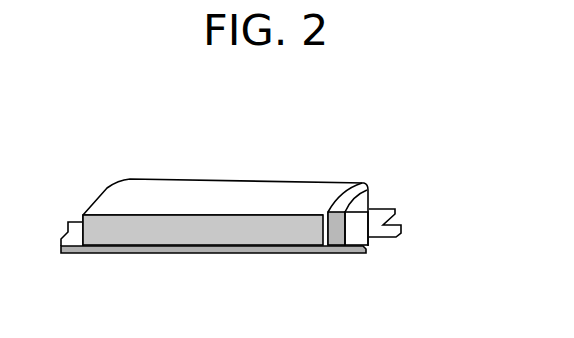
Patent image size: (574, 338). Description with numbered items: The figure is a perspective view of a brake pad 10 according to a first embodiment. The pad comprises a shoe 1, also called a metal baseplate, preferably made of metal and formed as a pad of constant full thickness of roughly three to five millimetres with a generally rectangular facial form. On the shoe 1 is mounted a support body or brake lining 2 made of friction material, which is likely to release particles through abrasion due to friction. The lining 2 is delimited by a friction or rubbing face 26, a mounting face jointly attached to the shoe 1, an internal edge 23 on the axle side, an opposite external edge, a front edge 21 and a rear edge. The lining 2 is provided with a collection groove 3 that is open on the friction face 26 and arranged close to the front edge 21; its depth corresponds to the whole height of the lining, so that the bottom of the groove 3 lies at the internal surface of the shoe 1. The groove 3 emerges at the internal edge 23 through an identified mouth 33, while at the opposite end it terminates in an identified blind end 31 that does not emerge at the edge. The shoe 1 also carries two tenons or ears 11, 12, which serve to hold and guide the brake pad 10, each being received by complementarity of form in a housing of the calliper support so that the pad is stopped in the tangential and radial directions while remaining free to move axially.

The electronic component device 10 is at (87, 170).
The shoe 1 is at (226, 256).
The tenon 11 is at (400, 233).
The tenon 12 is at (65, 230).
The brake lining 2 is at (225, 175).
The friction face 26 is at (173, 192).
The internal edge 23 is at (148, 230).
The collection groove 3 is at (358, 213).
The blind end 31 is at (368, 190).
The mouth 33 is at (328, 238).
The front edge 21 is at (353, 223).